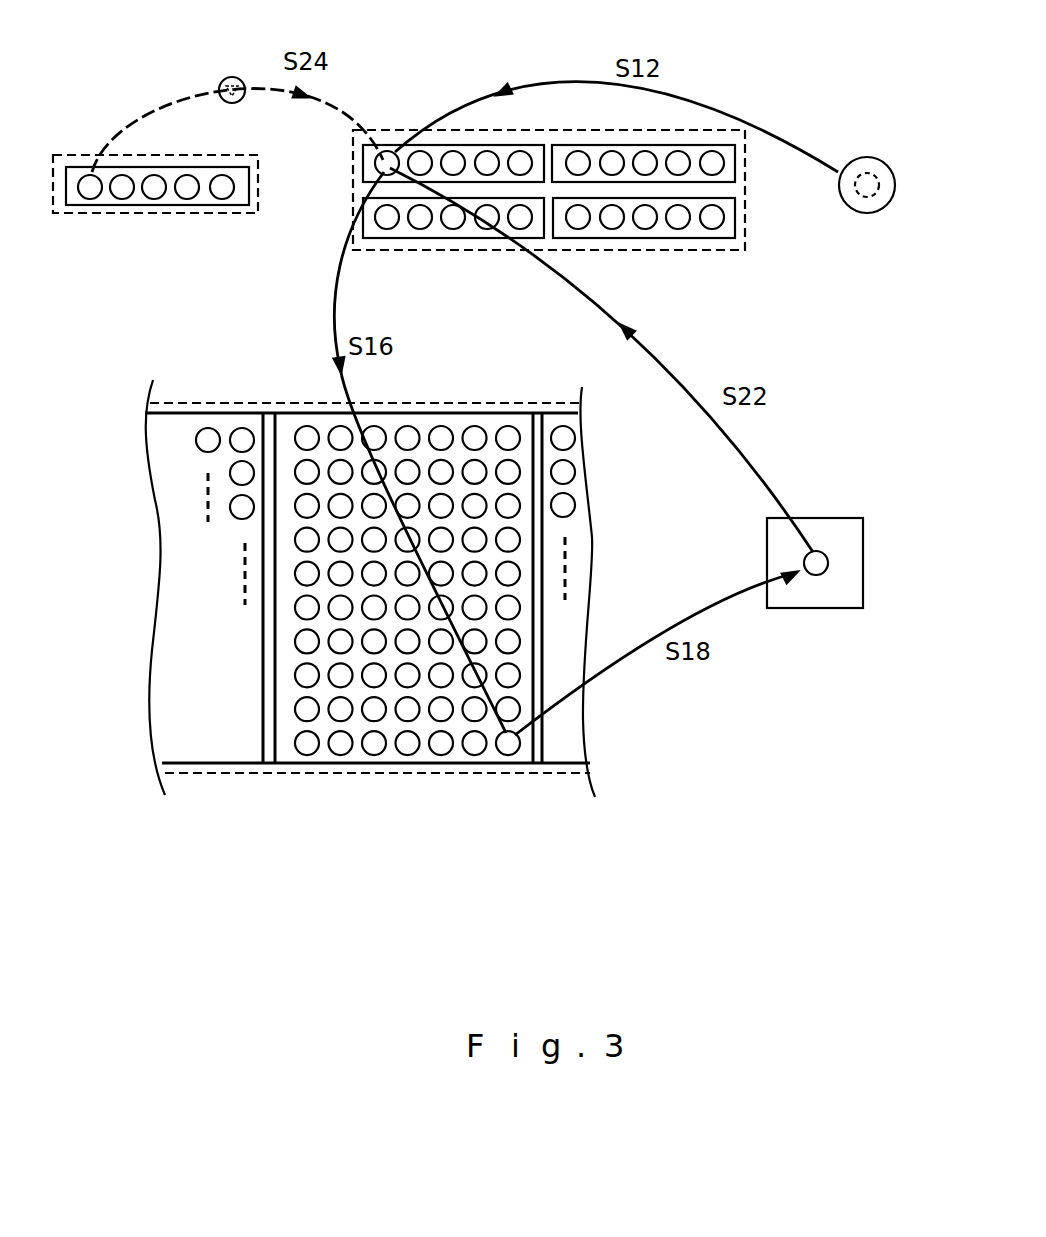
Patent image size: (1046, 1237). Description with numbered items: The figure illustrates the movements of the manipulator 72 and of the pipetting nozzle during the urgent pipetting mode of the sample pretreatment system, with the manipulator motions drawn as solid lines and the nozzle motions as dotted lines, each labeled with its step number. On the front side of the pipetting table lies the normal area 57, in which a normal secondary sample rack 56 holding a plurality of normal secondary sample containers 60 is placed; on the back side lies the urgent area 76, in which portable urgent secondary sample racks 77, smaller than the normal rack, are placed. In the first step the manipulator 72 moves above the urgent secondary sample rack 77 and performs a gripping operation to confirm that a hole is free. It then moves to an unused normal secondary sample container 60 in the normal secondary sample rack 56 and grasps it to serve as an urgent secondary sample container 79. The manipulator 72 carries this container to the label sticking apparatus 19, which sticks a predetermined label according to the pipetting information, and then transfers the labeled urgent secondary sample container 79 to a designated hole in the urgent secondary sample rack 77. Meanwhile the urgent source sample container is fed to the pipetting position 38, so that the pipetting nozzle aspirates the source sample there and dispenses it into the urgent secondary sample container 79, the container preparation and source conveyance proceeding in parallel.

The pipetting position 38 is at (162, 213).
The normal secondary sample container 60 is at (232, 77).
The urgent area 76 is at (718, 252).
The urgent secondary sample rack 77 is at (625, 238).
The urgent secondary sample container 79 is at (385, 150).
The manipulator 72 is at (865, 157).
The label sticking apparatus 19 is at (813, 610).
The normal secondary sample rack 56 is at (340, 763).
The normal area 57 is at (213, 775).